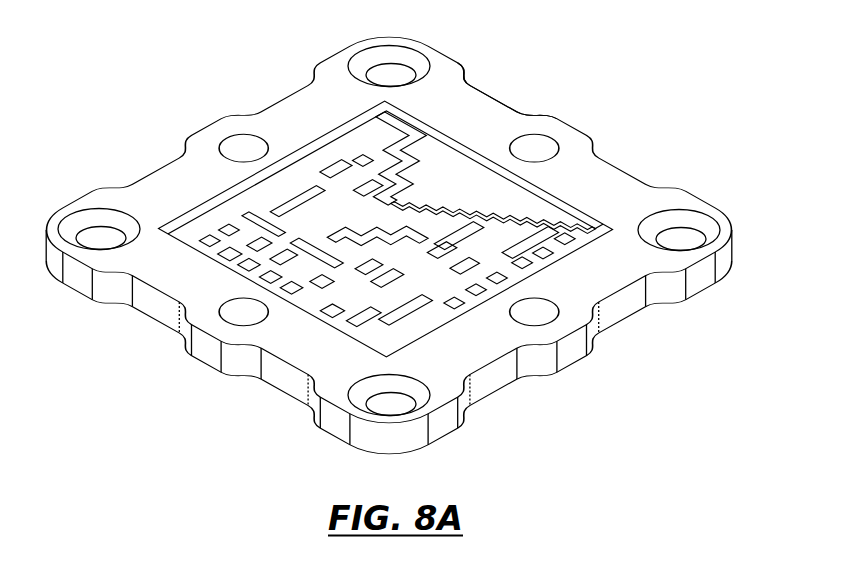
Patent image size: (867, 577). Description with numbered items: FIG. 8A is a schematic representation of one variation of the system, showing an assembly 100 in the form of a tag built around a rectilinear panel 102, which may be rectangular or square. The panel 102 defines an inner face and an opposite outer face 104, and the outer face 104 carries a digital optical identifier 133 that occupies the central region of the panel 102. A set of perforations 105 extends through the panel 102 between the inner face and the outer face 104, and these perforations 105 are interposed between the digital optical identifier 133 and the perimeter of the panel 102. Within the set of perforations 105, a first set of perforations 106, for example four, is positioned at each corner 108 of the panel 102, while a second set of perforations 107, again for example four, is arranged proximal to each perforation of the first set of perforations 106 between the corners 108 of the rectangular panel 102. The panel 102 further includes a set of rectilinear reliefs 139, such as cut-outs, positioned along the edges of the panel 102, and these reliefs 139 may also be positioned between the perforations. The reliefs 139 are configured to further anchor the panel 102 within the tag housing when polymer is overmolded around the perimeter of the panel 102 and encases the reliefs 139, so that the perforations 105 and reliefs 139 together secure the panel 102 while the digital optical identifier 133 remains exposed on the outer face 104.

The circuit board assembly 100 is at (721, 80).
The rectilinear panel 102 is at (303, 113).
The outer face 104 is at (193, 185).
The set of perforations 105 is at (673, 264).
The first set of perforations 106 is at (100, 257).
The second set of perforations 107 is at (237, 335).
The corner 108 is at (441, 405).
The digital optical identifier 133 is at (491, 183).
The set of rectilinear reliefs 139 is at (476, 88).